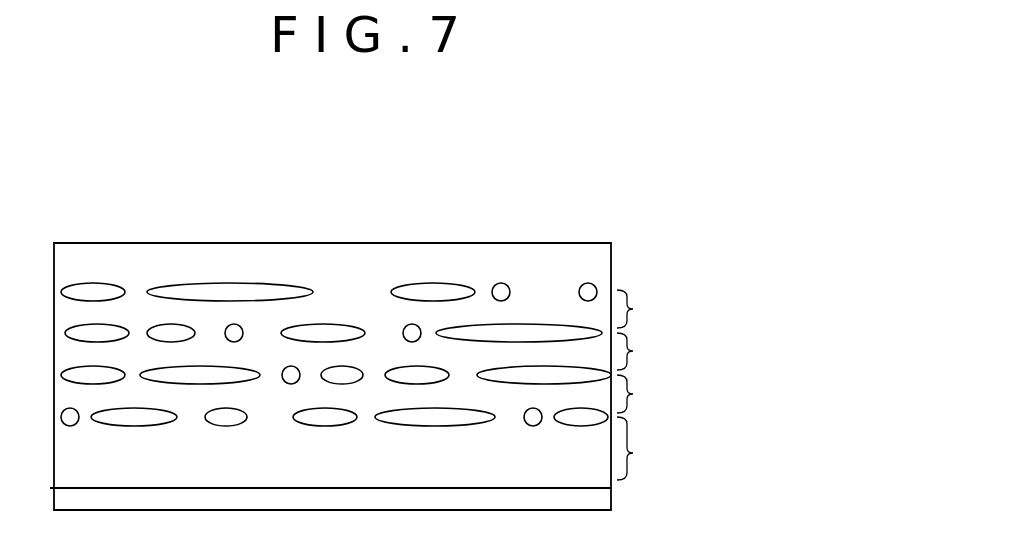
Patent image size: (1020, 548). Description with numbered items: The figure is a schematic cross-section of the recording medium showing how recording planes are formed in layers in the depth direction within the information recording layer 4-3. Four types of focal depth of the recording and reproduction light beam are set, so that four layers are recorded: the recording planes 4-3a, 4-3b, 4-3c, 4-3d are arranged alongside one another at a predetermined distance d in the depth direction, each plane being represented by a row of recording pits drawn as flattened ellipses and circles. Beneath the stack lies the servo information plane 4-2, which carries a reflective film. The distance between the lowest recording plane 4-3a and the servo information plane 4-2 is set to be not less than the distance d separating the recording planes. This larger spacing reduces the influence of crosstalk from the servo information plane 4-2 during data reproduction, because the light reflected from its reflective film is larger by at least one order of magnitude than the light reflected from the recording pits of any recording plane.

The information recording layer 4-3 is at (588, 243).
The recording plane 4-3d is at (612, 283).
The recording plane 4-3c is at (632, 327).
The recording plane 4-3b is at (632, 370).
The recording plane 4-3a is at (632, 415).
The servo information plane 4-2 is at (612, 487).